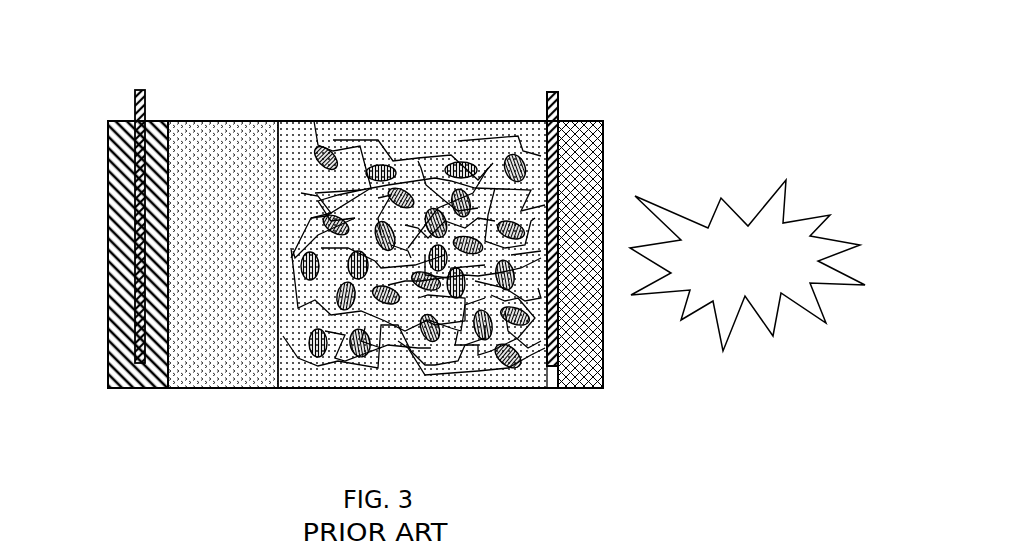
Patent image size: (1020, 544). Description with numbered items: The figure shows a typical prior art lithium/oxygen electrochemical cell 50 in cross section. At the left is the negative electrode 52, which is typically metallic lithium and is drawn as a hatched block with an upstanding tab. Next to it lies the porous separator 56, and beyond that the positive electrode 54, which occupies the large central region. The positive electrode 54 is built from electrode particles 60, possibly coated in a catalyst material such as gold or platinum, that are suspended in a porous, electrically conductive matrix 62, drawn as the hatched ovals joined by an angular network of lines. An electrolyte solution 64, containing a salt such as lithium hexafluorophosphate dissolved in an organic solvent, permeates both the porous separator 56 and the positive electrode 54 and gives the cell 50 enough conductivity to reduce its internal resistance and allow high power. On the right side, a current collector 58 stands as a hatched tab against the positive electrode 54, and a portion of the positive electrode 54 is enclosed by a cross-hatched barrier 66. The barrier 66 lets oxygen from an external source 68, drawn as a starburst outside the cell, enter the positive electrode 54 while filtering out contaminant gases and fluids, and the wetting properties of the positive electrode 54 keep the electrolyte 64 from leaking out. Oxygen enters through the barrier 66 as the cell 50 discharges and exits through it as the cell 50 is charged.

The lithium/oxygen electrochemical cell 50 is at (136, 56).
The negative electrode 52 is at (74, 200).
The positive electrode 54 is at (497, 382).
The porous separator 56 is at (200, 381).
The current collector 58 is at (550, 100).
The electrode particles 60 is at (320, 148).
The porous, electrically conductive matrix 62 is at (415, 150).
The electrolyte solution 64 is at (412, 258).
The barrier 66 is at (595, 128).
The external source 68 is at (778, 172).